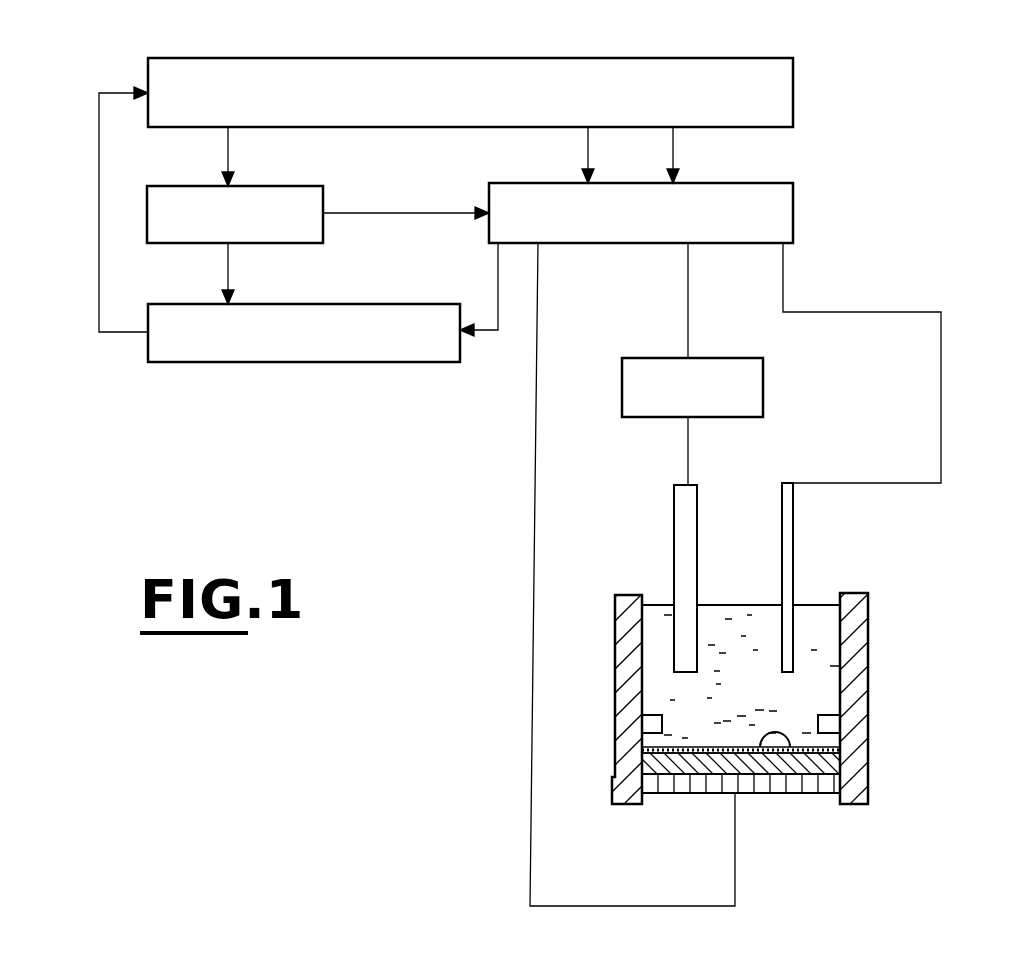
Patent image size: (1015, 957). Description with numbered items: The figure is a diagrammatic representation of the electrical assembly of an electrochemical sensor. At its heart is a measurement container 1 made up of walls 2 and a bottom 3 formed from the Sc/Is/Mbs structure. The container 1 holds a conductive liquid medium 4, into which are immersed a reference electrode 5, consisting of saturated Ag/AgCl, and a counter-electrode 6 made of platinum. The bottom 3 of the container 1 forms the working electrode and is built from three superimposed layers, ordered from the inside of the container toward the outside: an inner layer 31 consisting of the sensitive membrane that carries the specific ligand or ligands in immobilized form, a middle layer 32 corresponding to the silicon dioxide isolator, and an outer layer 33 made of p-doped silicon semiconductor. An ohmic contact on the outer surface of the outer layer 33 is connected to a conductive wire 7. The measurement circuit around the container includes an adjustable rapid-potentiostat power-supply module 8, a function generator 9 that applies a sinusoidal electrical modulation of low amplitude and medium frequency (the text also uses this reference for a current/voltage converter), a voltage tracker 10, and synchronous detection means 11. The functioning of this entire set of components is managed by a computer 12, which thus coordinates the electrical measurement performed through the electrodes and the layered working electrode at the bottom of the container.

The measurement container 1 is at (798, 685).
The walls 2 is at (855, 700).
The bottom 3 is at (764, 809).
The inner layer 31 is at (797, 753).
The middle layer 32 is at (693, 762).
The outer layer 33 is at (810, 793).
The conductive liquid medium 4 is at (813, 613).
The reference electrode 5 is at (685, 500).
The counter-electrode 6 is at (788, 538).
The conductive wire 7 is at (530, 810).
The control unit 8 is at (775, 215).
The function generator 9 is at (302, 228).
The voltage tracker 10 is at (748, 397).
The synchronous detection means 11 is at (245, 350).
The computer 12 is at (783, 102).